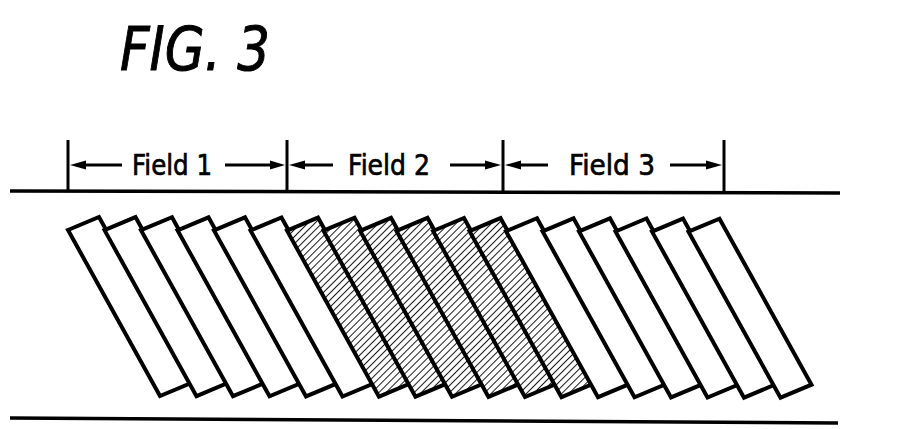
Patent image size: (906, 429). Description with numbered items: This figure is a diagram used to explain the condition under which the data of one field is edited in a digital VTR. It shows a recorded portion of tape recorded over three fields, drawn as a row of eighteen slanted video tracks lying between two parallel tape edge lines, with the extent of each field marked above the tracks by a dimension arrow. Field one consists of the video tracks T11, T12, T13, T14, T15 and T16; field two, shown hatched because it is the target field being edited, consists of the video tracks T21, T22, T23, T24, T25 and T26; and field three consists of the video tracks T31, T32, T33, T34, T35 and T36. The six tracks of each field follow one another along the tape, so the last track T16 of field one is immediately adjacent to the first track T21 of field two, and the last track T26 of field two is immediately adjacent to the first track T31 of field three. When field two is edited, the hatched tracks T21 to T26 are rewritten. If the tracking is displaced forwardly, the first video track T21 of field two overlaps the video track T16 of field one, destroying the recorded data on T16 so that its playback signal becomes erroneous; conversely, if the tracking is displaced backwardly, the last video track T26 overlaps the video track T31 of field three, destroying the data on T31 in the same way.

The video track T11 is at (127, 295).
The video track T12 is at (163, 295).
The video track T13 is at (199, 295).
The video track T14 is at (236, 295).
The video track T15 is at (273, 295).
The video track T16 is at (310, 295).
The first video track T21 is at (346, 295).
The video track T22 is at (383, 295).
The video track T23 is at (419, 295).
The video track T24 is at (456, 295).
The video track T25 is at (493, 295).
The last video track T26 is at (530, 295).
The video track T31 is at (566, 295).
The video track T32 is at (603, 295).
The video track T33 is at (640, 295).
The video track T34 is at (676, 296).
The video track T35 is at (713, 296).
The video track T36 is at (750, 296).